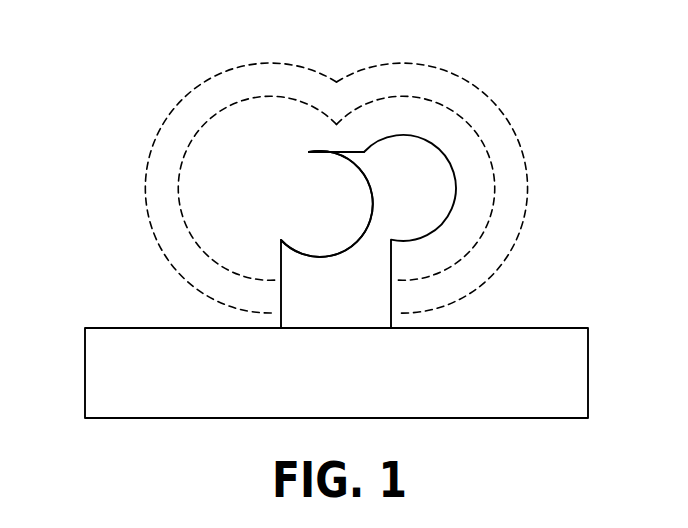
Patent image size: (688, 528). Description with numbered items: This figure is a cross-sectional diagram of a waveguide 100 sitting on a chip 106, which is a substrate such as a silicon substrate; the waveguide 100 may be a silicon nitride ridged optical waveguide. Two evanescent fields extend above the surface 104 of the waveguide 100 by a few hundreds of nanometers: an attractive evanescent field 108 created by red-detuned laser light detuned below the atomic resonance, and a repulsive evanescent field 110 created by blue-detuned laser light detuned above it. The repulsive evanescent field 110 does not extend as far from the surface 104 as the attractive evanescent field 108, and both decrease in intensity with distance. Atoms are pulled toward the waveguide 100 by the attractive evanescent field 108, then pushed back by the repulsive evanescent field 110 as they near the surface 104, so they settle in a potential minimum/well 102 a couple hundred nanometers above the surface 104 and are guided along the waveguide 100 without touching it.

The waveguide 100 is at (255, 197).
The potential minimum/well 102 is at (336, 126).
The surface 104 is at (215, 172).
The chip 106 is at (118, 388).
The attractive evanescent field 108 is at (515, 210).
The repulsive evanescent field 110 is at (472, 153).